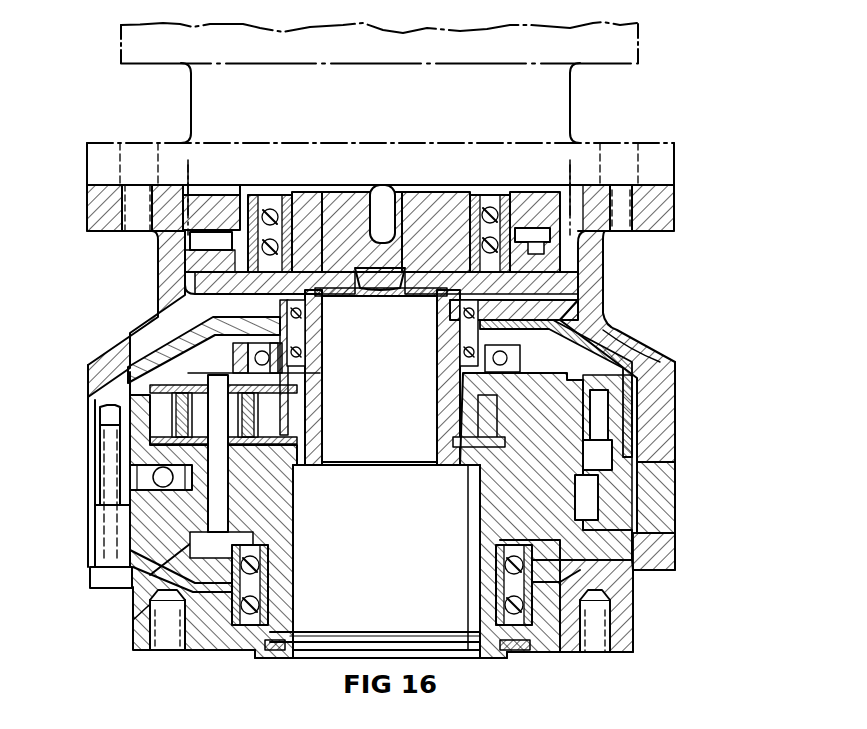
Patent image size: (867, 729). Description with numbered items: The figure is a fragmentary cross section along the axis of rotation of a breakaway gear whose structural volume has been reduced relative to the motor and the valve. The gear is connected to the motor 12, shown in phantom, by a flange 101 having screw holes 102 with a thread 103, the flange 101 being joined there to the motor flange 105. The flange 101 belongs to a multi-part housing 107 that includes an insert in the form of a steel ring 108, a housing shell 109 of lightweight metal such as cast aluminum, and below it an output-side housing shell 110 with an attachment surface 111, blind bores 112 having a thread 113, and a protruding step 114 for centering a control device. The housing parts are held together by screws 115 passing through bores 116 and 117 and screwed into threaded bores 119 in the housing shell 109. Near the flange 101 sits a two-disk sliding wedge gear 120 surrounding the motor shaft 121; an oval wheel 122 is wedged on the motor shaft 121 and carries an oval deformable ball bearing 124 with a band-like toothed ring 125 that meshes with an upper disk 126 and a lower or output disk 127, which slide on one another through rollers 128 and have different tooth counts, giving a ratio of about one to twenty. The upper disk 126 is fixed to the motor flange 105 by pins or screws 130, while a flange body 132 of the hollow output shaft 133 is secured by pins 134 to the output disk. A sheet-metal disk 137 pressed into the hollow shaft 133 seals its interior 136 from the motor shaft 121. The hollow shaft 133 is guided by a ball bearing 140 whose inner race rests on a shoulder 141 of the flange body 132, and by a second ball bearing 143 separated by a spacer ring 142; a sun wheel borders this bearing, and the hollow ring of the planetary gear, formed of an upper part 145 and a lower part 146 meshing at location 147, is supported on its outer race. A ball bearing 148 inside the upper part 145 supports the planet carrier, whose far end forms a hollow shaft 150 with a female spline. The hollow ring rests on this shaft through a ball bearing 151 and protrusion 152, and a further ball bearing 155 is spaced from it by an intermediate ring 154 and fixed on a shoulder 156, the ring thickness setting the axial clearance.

The motor 12 is at (639, 35).
The motor flange 105 is at (650, 150).
The pins or screws 130 is at (186, 180).
The screw holes 102 is at (640, 200).
The thread 103 is at (648, 212).
The flange 101 is at (668, 222).
The upper disk 126 is at (205, 190).
The rollers 128 is at (195, 242).
The lower or output disk 127 is at (195, 264).
The band-like toothed ring 125 is at (264, 192).
The deformable ball bearing 124 is at (302, 202).
The two-disk sliding wedge gear 120 is at (325, 207).
The motor shaft 121 is at (382, 202).
The oval wheel 122 is at (432, 216).
The shoulder 141 is at (464, 215).
The pins 134 is at (575, 247).
The flange body 132 is at (222, 298).
The housing shell 109 is at (598, 265).
The ball bearing 140 is at (590, 303).
The upper part 145 is at (628, 356).
The location 147 is at (135, 373).
The bore 117 is at (132, 477).
The bore 116 is at (112, 522).
The threaded bores 119 is at (104, 424).
The screws 115 is at (98, 560).
The thread 113 is at (150, 632).
The blind bores 112 is at (165, 645).
The attachment surface 111 is at (232, 648).
The shoulder 156 is at (250, 642).
The hollow shaft 150 is at (275, 583).
The interior 136 is at (390, 385).
The sheet-metal disk 137 is at (372, 296).
The spacer ring 142 is at (305, 330).
The hollow output shaft 133 is at (306, 335).
The second ball bearing 143 is at (462, 345).
The ball bearing 148 is at (512, 360).
The multi-part housing 107 is at (665, 412).
The lower part 146 is at (622, 458).
The steel ring 108 is at (668, 478).
The protrusion 152 is at (580, 522).
The output-side housing shell 110 is at (655, 555).
The ball bearing 151 is at (592, 563).
The intermediate ring 154 is at (530, 557).
The further ball bearing 155 is at (528, 632).
The step 114 is at (503, 654).